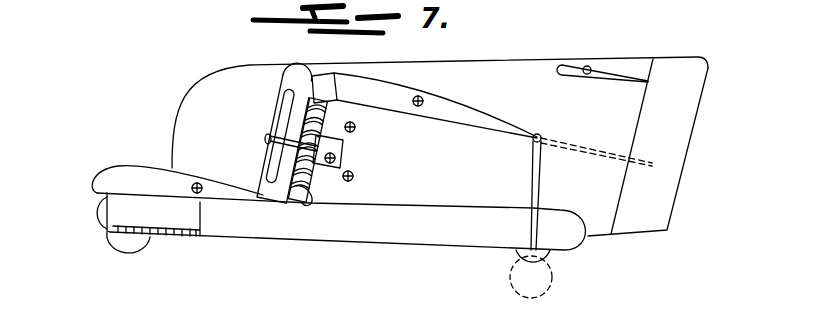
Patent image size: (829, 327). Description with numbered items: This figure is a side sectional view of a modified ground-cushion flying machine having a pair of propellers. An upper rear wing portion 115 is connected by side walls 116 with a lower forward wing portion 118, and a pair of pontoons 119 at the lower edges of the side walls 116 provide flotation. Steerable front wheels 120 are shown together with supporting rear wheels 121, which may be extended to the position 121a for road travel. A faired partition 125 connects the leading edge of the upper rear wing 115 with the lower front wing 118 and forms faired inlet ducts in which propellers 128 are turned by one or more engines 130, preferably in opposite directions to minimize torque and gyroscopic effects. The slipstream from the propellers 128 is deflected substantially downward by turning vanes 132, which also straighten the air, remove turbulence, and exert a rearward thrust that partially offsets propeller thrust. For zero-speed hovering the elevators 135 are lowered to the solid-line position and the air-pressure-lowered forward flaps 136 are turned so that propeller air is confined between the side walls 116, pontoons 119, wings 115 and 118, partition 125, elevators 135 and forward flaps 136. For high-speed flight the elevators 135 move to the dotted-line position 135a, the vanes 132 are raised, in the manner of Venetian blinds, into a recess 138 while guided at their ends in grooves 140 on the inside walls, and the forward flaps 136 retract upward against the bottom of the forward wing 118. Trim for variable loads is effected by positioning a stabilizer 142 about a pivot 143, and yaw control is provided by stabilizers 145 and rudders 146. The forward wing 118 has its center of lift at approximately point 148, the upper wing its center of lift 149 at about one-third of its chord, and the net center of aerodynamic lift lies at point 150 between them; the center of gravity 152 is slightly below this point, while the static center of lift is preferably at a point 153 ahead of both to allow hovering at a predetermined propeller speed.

The upper rear wing portion 115 is at (494, 112).
The side walls 116 is at (508, 193).
The lower forward wing portion 118 is at (117, 172).
The pontoons 119 is at (427, 238).
The steerable front wheels 120 is at (147, 241).
The supporting rear wheels 121 is at (550, 258).
The extended position of rear wheels 121a is at (545, 288).
The faired partition 125 is at (268, 118).
The propellers 128 is at (282, 100).
The engines 130 is at (343, 151).
The turning vanes 132 is at (308, 202).
The elevators 135 is at (538, 205).
The dotted line position of elevators 135a is at (560, 150).
The forward flaps 136 is at (92, 213).
The recess 138 is at (300, 70).
The grooves 140 is at (325, 74).
The stabilizer 142 is at (575, 70).
The pivot 143 is at (587, 66).
The stabilizers 145 is at (615, 116).
The rudders 146 is at (689, 146).
The center of lift of forward wing 148 is at (192, 188).
The center of lift of upper wing 149 is at (423, 104).
The net center of aerodynamic lift 150 is at (356, 126).
The center of gravity 152 is at (350, 181).
The static center of lift 153 is at (335, 160).